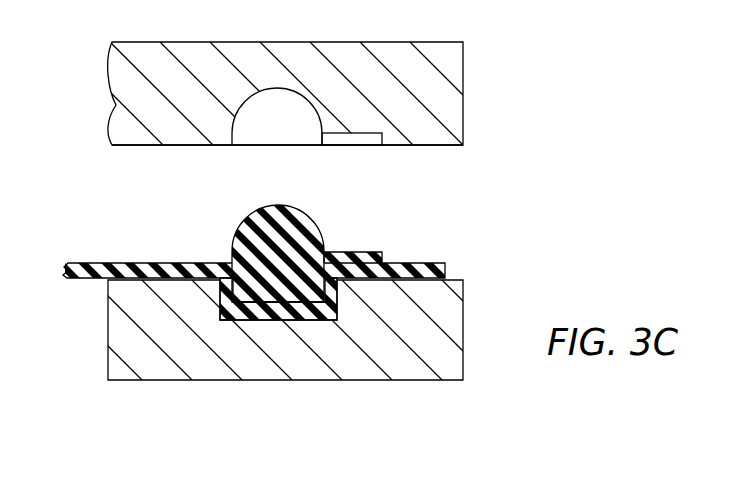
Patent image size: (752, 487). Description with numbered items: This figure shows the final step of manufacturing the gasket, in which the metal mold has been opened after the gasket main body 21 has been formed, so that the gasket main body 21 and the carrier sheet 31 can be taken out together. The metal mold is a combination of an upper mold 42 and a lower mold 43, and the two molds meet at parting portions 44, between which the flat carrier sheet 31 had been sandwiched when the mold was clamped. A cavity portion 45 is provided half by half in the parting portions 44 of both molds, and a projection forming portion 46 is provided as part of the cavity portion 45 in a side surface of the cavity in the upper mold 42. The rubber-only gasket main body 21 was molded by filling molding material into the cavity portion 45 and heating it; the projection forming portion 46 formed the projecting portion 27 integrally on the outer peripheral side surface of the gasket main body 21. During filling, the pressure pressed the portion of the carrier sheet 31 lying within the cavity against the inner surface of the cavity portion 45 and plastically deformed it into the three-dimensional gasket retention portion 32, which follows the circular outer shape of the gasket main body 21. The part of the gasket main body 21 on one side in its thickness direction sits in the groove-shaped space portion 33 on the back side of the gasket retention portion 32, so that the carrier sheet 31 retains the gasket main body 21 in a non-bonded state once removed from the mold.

The gasket main body 21 is at (296, 262).
The projecting portion 27 is at (370, 250).
The carrier sheet 31 is at (445, 268).
The gasket retention portion 32 is at (258, 303).
The space portion 33 is at (328, 300).
The upper mold 42 is at (126, 131).
The lower mold 43 is at (125, 363).
The parting portions 44 is at (143, 148).
The cavity portion 45 is at (267, 120).
The projection forming portion 46 is at (325, 123).